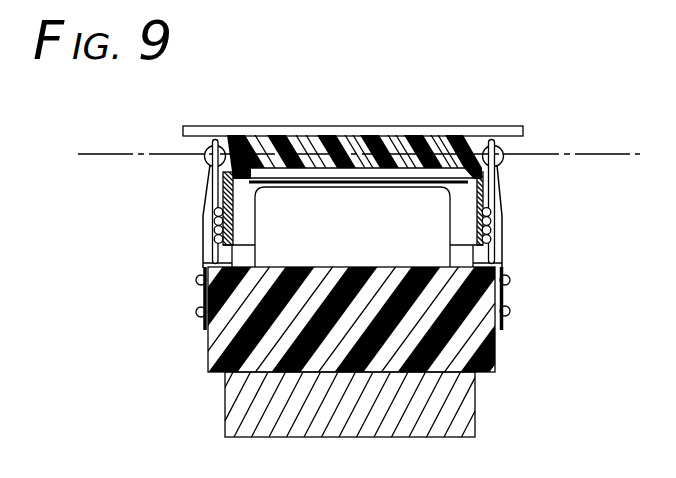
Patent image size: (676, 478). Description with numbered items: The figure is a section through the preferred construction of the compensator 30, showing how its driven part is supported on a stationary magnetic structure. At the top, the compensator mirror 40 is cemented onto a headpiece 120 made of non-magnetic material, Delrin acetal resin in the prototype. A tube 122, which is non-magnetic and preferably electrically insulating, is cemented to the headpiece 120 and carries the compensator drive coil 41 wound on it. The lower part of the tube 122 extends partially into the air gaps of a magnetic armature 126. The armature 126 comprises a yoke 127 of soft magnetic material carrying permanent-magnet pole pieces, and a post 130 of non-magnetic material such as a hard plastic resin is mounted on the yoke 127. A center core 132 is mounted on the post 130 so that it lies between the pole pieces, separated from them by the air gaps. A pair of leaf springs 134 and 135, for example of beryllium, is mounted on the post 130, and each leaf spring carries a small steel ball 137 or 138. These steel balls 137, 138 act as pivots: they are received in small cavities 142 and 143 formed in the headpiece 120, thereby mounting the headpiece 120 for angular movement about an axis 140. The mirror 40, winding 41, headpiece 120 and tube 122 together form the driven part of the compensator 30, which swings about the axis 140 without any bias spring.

The compensator 30 is at (195, 296).
The compensator mirror 40 is at (503, 127).
The compensator drive coil 41 is at (486, 218).
The headpiece 120 is at (297, 135).
The tube 122 is at (218, 196).
The magnetic armature 126 is at (216, 401).
The yoke 127 is at (460, 408).
The post 130 is at (209, 352).
The center core 132 is at (356, 243).
The leaf spring 134 is at (208, 244).
The leaf spring 135 is at (503, 258).
The steel ball 137 is at (204, 164).
The steel ball 138 is at (503, 166).
The axis 140 is at (580, 157).
The cavity 142 is at (242, 134).
The cavity 143 is at (471, 133).